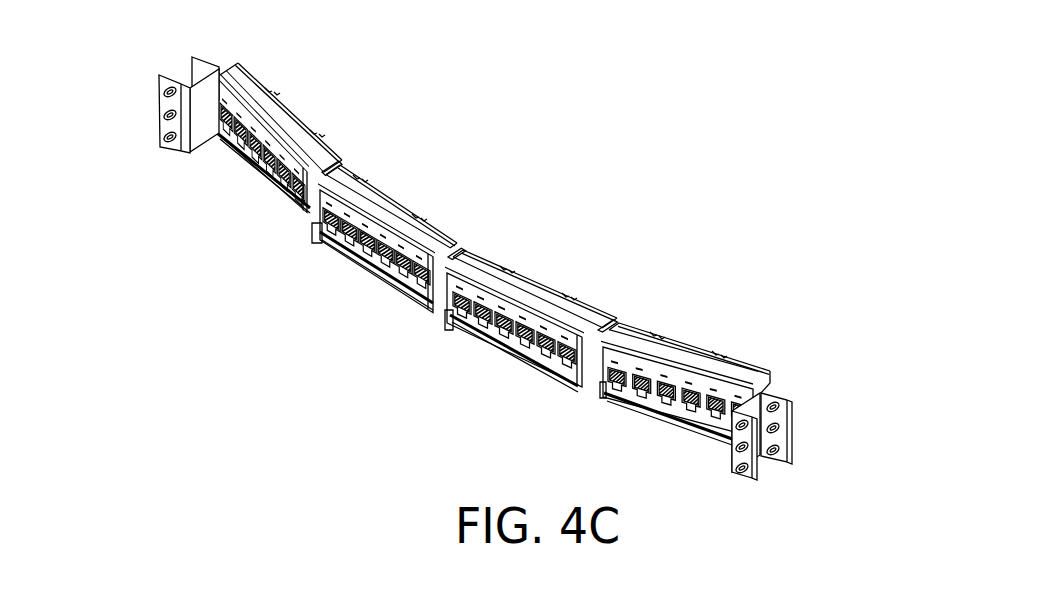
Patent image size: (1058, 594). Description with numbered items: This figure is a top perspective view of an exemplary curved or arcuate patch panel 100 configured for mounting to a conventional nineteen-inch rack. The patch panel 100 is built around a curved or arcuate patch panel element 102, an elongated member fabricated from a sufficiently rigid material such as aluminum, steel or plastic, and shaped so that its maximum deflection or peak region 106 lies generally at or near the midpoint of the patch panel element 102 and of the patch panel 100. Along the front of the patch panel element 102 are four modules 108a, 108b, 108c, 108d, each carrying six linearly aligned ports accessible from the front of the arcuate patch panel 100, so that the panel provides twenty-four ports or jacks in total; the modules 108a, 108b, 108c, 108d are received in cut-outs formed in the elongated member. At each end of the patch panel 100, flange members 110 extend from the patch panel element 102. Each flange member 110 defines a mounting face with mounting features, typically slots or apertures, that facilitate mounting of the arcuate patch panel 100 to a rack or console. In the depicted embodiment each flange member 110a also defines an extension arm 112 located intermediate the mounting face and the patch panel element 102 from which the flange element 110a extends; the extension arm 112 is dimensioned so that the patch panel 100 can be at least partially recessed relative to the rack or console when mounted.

The patch panel 100 is at (495, 272).
The patch panel element 102 is at (597, 352).
The peak region 106 is at (482, 357).
The module 108a is at (288, 112).
The module 108b is at (408, 207).
The module 108c is at (538, 283).
The module 108d is at (676, 343).
The flange member 110 is at (201, 60).
The flange member 110a is at (166, 148).
The extension arm 112 is at (194, 140).